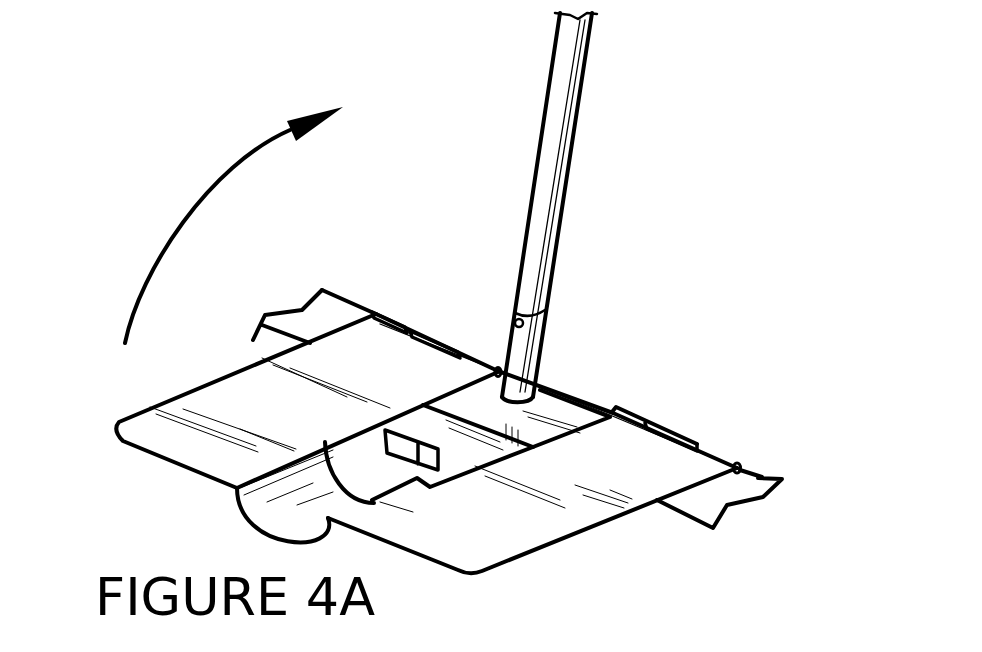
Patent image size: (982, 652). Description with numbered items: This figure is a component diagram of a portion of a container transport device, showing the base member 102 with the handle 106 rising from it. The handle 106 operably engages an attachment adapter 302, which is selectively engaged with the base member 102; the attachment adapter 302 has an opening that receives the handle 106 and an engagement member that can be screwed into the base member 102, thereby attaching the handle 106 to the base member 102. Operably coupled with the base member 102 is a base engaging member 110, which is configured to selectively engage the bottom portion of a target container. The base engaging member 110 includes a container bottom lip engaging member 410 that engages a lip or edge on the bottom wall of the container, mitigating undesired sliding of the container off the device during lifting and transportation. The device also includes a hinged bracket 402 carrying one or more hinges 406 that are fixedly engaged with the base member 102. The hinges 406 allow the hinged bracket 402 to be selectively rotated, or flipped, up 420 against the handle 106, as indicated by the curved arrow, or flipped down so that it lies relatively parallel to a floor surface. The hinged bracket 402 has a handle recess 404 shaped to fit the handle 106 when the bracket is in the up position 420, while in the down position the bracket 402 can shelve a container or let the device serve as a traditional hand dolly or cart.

The base member 102 is at (760, 483).
The handle 106 is at (578, 62).
The base engaging member 110 is at (448, 448).
The attachment adapter 302 is at (537, 347).
The hinged bracket 402 is at (454, 555).
The handle recess 404 is at (236, 498).
The hinges 406 is at (398, 312).
The container bottom lip engaging member 410 is at (212, 380).
The up position 420 is at (188, 211).